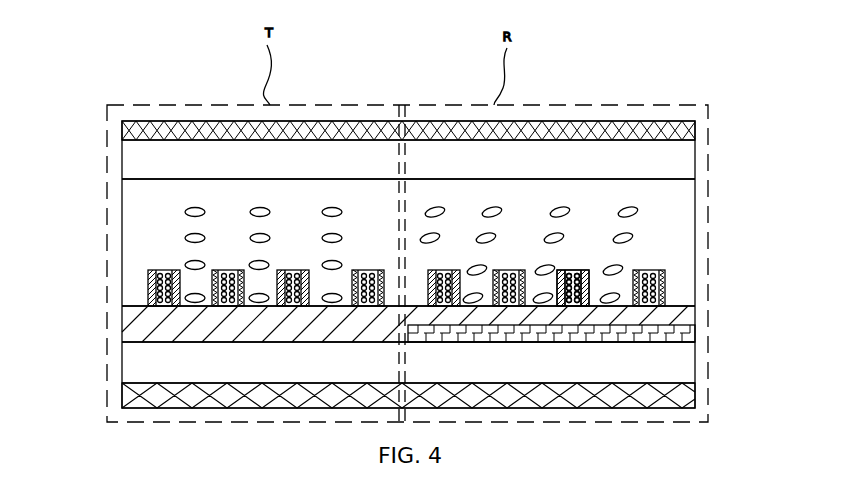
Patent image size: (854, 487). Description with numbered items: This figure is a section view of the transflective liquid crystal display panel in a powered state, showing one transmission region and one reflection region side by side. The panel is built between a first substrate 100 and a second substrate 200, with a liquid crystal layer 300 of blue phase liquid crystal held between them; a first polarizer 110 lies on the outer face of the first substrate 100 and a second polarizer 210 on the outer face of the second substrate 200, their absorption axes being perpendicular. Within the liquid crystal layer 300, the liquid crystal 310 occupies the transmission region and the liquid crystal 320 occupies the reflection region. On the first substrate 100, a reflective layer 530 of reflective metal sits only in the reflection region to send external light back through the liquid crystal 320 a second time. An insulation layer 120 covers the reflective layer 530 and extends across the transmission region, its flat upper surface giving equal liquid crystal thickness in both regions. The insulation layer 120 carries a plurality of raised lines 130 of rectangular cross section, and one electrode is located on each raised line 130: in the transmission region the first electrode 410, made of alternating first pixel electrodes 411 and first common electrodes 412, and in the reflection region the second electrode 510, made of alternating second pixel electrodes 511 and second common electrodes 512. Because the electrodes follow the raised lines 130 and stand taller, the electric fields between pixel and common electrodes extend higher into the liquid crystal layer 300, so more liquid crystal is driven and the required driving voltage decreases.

The first substrate 100 is at (135, 372).
The first polarizer 110 is at (687, 397).
The insulation layer 120 is at (143, 323).
The raised line 130 is at (573, 270).
The second substrate 200 is at (677, 157).
The second polarizer 210 is at (675, 122).
The liquid crystal layer 300 is at (675, 192).
The liquid crystal 310 is at (195, 238).
The liquid crystal 320 is at (628, 212).
The first electrode 410 is at (197, 276).
The first pixel electrode 411 is at (150, 293).
The first common electrode 412 is at (227, 268).
The second electrode 510 is at (615, 279).
The second pixel electrode 511 is at (588, 277).
The second common electrode 512 is at (667, 283).
The reflective layer 530 is at (680, 333).